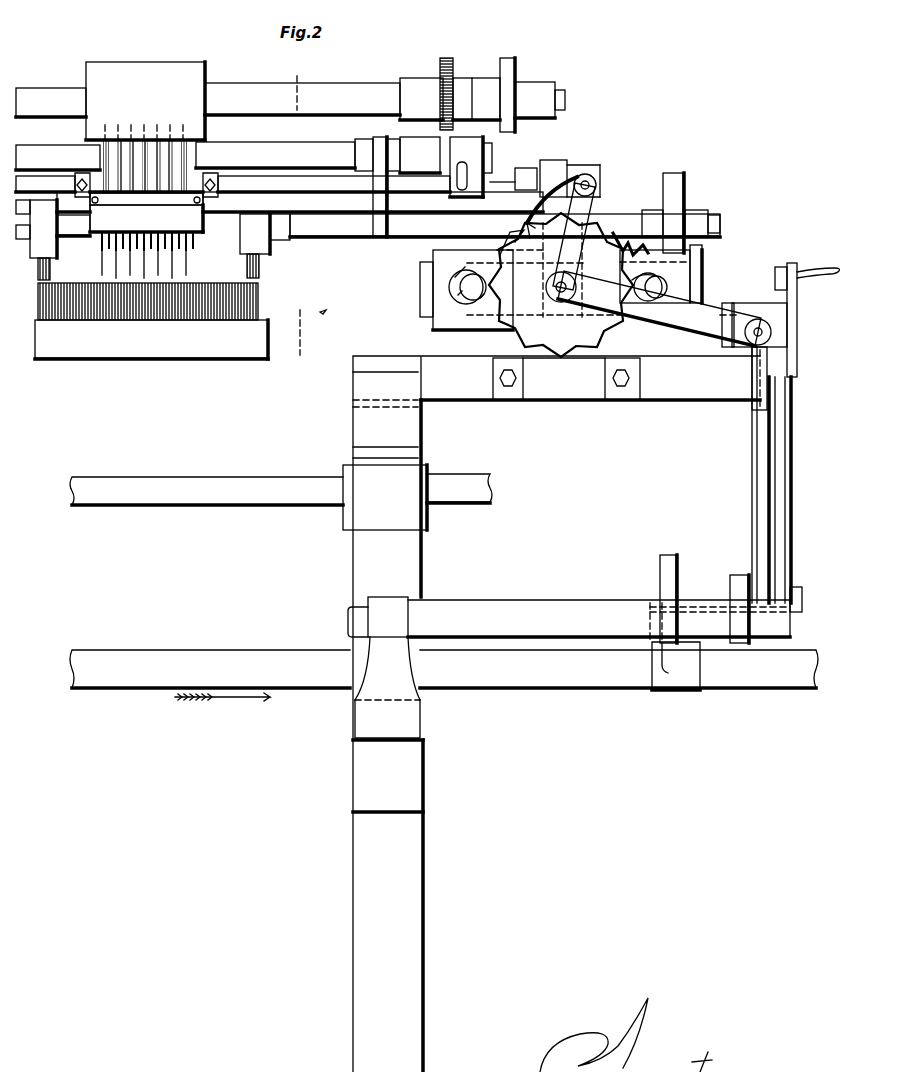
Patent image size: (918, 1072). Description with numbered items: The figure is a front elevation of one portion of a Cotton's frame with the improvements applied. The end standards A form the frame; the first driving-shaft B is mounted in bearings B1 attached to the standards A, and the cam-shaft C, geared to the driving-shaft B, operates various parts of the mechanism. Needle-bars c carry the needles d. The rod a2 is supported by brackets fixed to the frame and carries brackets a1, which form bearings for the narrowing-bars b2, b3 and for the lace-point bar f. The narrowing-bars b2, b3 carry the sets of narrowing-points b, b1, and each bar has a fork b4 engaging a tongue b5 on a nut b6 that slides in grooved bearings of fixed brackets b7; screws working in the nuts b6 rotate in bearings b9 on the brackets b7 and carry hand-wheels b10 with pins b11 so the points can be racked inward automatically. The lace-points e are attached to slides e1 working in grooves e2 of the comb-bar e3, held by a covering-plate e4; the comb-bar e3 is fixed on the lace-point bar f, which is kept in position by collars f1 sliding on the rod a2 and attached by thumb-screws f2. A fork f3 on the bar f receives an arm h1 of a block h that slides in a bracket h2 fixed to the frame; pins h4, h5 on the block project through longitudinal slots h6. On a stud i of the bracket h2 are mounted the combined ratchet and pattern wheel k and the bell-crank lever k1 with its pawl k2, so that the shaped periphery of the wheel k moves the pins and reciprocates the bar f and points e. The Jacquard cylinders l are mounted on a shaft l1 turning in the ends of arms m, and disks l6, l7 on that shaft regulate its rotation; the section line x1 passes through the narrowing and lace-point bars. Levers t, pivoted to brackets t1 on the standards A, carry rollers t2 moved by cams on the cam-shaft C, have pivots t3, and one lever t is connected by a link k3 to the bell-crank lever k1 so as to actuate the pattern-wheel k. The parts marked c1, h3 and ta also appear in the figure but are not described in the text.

The end standard A is at (388, 714).
The first driving-shaft B is at (281, 489).
The bearing B1 is at (385, 497).
The cam-shaft C is at (444, 675).
The needle-bar c is at (151, 339).
The stop on cross bar c1 is at (652, 604).
The needle d is at (148, 301).
The lace-point e is at (144, 263).
The slide e1 is at (146, 243).
The groove e2 is at (146, 165).
The comb-bar e3 is at (228, 162).
The covering-plate e4 is at (146, 218).
The lace-point bar f is at (233, 185).
The collar f1 is at (466, 167).
The thumb-screw f2 is at (492, 165).
The fork f3 is at (598, 160).
The Jacquard cylinder l is at (145, 101).
The Jacquard cylinder-shaft l1 is at (208, 100).
The plain disk l6 is at (507, 58).
The notched disk l7 is at (454, 87).
The arm m is at (482, 99).
The section line x1 is at (307, 217).
The bracket a1 is at (380, 237).
The rod a2 is at (228, 155).
The narrowing-point b is at (36, 241).
The narrowing-point b1 is at (259, 265).
The narrowing-bar b2 is at (310, 182).
The narrowing-bar b3 is at (316, 237).
The fork b4 is at (650, 210).
The tongue b5 is at (673, 213).
The nut b6 is at (722, 300).
The fixed bracket b7 is at (556, 378).
The bearing b9 is at (752, 305).
The hand-wheel b10 is at (797, 305).
The pin b11 is at (807, 266).
The sliding block h is at (420, 285).
The arm h1 is at (570, 225).
The bracket h2 is at (651, 249).
The roller h3 is at (558, 287).
The pin h4 is at (452, 303).
The pin h5 is at (476, 305).
The longitudinal slot h6 is at (565, 274).
The stud i is at (546, 287).
The combined ratchet and pattern wheel k is at (550, 285).
The bell-crank lever k1 is at (659, 308).
The pawl k2 is at (538, 216).
The link k3 is at (752, 493).
The lever t is at (569, 609).
The bracket t1 is at (387, 687).
The roller t2 is at (677, 565).
The pivot t3 is at (802, 596).
The rod ta is at (785, 488).